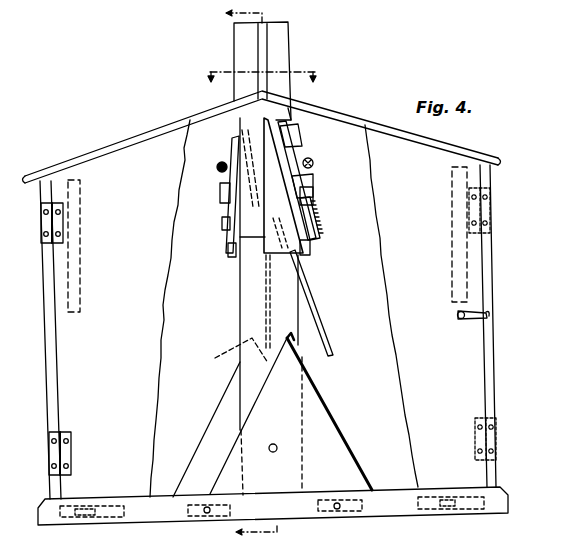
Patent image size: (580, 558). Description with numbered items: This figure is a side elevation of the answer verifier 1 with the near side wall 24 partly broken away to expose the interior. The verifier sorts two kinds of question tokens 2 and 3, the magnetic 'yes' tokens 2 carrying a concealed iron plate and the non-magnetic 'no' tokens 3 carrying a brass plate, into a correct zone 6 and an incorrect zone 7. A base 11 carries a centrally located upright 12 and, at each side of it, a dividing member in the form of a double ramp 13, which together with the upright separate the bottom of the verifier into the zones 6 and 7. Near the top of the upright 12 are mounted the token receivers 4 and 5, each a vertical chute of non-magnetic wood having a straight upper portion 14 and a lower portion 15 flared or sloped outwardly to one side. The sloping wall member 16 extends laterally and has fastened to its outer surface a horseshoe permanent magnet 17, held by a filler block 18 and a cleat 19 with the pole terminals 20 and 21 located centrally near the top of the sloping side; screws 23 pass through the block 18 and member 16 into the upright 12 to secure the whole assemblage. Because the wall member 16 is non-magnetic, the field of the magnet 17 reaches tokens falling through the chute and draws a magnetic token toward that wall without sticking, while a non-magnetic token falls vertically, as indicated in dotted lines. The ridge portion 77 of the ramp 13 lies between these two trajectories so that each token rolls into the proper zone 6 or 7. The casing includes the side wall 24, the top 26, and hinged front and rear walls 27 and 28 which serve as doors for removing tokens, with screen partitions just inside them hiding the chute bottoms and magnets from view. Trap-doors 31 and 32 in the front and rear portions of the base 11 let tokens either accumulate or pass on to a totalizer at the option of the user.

The answer verifier 1 is at (506, 401).
The question record or token 2 is at (322, 329).
The question record or token 3 is at (266, 312).
The token receiver 4 is at (300, 58).
The token receiver 5 is at (241, 274).
The classification zone 6 is at (526, 346).
The classification zone 7 is at (172, 432).
The base 11 is at (289, 509).
The upright 12 is at (240, 307).
The double ramp 13 is at (318, 410).
The upper portion of chute 14 is at (279, 45).
The lower portion of chute 15 is at (270, 184).
The sloping wall member 16 is at (311, 251).
The permanent magnet 17 is at (322, 232).
The filler block 18 is at (294, 150).
The cleat 19 is at (300, 186).
The pole terminal 20 is at (300, 136).
The pole terminal 21 is at (316, 205).
The screw 23 is at (314, 163).
The side wall 24 is at (152, 355).
The top 26 is at (106, 148).
The hinged front wall 27 is at (495, 262).
The hinged rear wall 28 is at (44, 312).
The trap-door 31 is at (468, 506).
The trap-door 32 is at (88, 524).
The ridge portion 77 is at (291, 341).